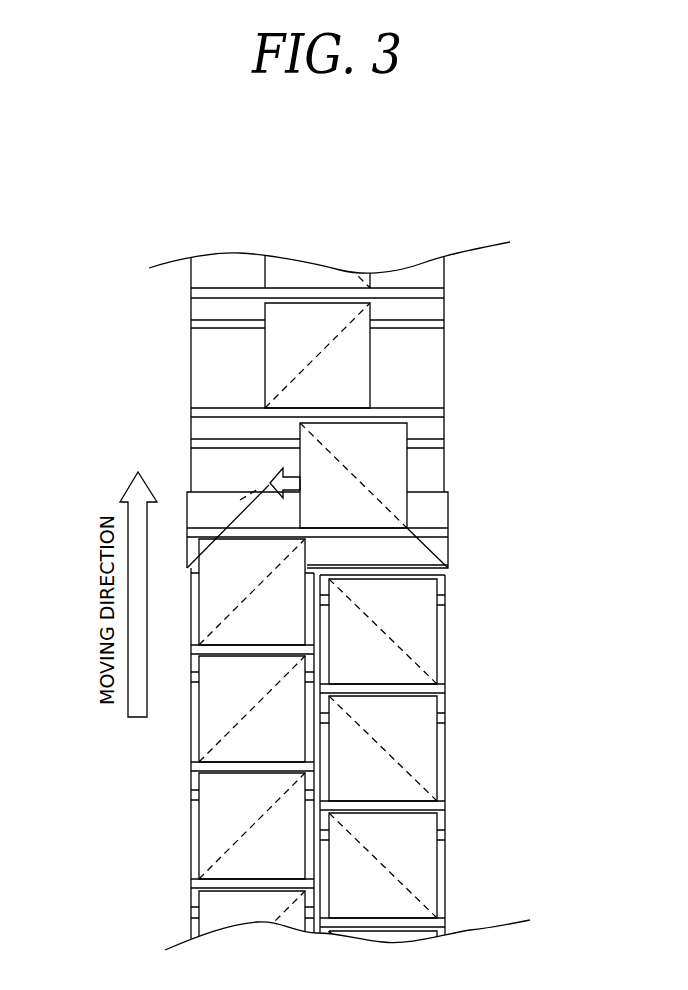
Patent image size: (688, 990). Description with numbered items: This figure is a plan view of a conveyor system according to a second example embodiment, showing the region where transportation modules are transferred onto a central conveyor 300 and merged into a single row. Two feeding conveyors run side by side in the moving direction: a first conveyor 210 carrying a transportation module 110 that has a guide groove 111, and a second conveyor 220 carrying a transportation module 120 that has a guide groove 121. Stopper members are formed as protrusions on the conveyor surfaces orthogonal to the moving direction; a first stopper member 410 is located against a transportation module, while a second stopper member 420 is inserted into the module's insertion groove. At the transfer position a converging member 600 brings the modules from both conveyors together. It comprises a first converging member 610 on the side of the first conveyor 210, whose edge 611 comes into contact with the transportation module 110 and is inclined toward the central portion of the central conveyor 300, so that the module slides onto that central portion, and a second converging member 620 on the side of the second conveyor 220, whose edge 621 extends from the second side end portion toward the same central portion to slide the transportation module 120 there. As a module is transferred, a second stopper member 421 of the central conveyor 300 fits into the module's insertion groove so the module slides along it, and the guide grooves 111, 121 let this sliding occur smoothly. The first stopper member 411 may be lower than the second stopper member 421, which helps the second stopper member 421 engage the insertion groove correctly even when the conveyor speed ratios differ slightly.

The central conveyor 300 is at (163, 370).
The transportation module 110 is at (197, 860).
The guide groove 111 is at (210, 825).
The transportation module 120 is at (437, 652).
The guide groove 121 is at (423, 630).
The first conveyor 210 is at (190, 779).
The second conveyor 220 is at (440, 782).
The first stopper member 410 is at (437, 808).
The first stopper member 411 is at (440, 410).
The second stopper member 420 is at (443, 715).
The second stopper member 421 is at (443, 322).
The converging member 600 is at (555, 417).
The first converging member 610 is at (297, 481).
The edge 611 is at (223, 528).
The second converging member 620 is at (440, 515).
The edge 621 is at (448, 528).